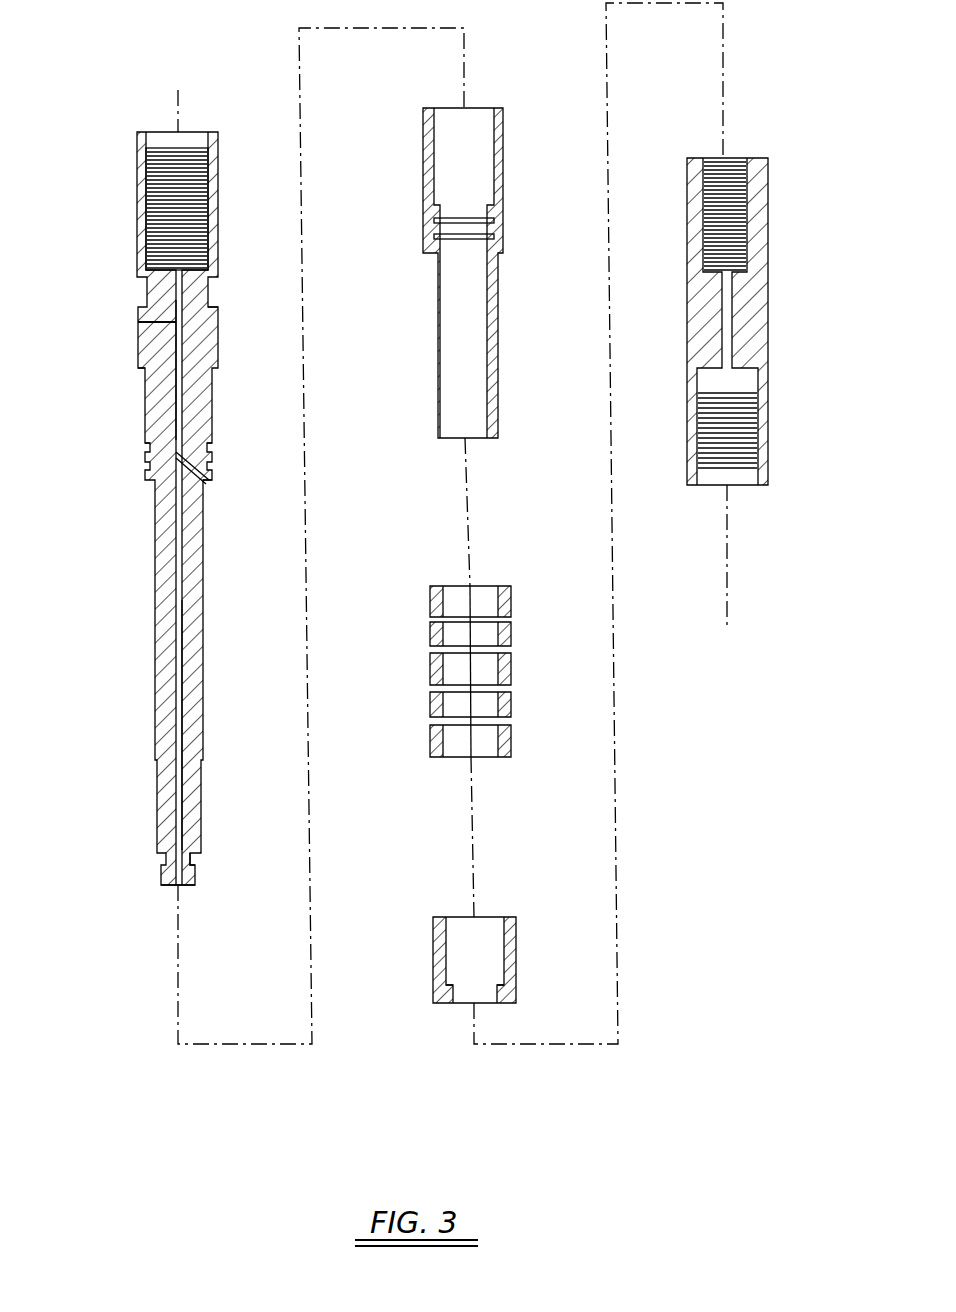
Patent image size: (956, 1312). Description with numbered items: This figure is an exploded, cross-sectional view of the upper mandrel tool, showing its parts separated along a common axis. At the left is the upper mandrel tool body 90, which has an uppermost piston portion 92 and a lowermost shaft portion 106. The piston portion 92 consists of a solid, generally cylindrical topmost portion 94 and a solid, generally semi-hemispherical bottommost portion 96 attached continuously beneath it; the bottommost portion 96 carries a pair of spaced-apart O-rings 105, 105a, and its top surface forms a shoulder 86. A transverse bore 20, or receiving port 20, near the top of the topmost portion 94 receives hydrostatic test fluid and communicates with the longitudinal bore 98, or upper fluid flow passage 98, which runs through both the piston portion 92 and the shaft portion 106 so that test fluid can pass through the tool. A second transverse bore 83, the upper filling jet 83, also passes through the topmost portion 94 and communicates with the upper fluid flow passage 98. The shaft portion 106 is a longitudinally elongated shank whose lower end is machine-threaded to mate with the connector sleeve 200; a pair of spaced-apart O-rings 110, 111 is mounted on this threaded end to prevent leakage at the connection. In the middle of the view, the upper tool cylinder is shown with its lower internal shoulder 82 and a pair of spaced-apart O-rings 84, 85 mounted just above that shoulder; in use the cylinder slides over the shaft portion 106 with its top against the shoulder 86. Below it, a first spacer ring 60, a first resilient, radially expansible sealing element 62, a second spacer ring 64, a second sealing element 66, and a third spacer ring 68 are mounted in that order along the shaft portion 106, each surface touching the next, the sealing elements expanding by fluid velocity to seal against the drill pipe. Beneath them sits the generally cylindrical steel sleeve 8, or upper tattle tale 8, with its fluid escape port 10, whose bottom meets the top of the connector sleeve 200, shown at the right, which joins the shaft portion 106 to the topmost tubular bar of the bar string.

The upper tattle tale 8 is at (518, 938).
The fluid escape port 10 is at (518, 980).
The transverse bore (receiving port) 20 is at (165, 323).
The first spacer ring 60 is at (512, 600).
The first sealing element 62 is at (512, 634).
The second spacer ring 64 is at (512, 671).
The second sealing element 66 is at (512, 706).
The third spacer ring 68 is at (512, 742).
The lower internal shoulder 82 is at (436, 208).
The O-ring 84 is at (500, 222).
The O-ring 85 is at (500, 237).
The shoulder 86 is at (142, 366).
The upper mandrel tool body 90 is at (162, 583).
The uppermost piston portion 92 is at (208, 266).
The topmost portion 94 is at (208, 326).
The bottommost portion 96 is at (148, 440).
The longitudinal bore (upper fluid flow passage) 98 is at (180, 412).
The O-ring 105 is at (213, 450).
The O-ring 105a is at (212, 466).
The transverse bore (upper filling jet) 83 is at (206, 484).
The lowermost shaft portion (shank) 106 is at (190, 708).
The O-ring 110 is at (200, 858).
The O-ring 111 is at (196, 872).
The connector sleeve 200 is at (768, 306).